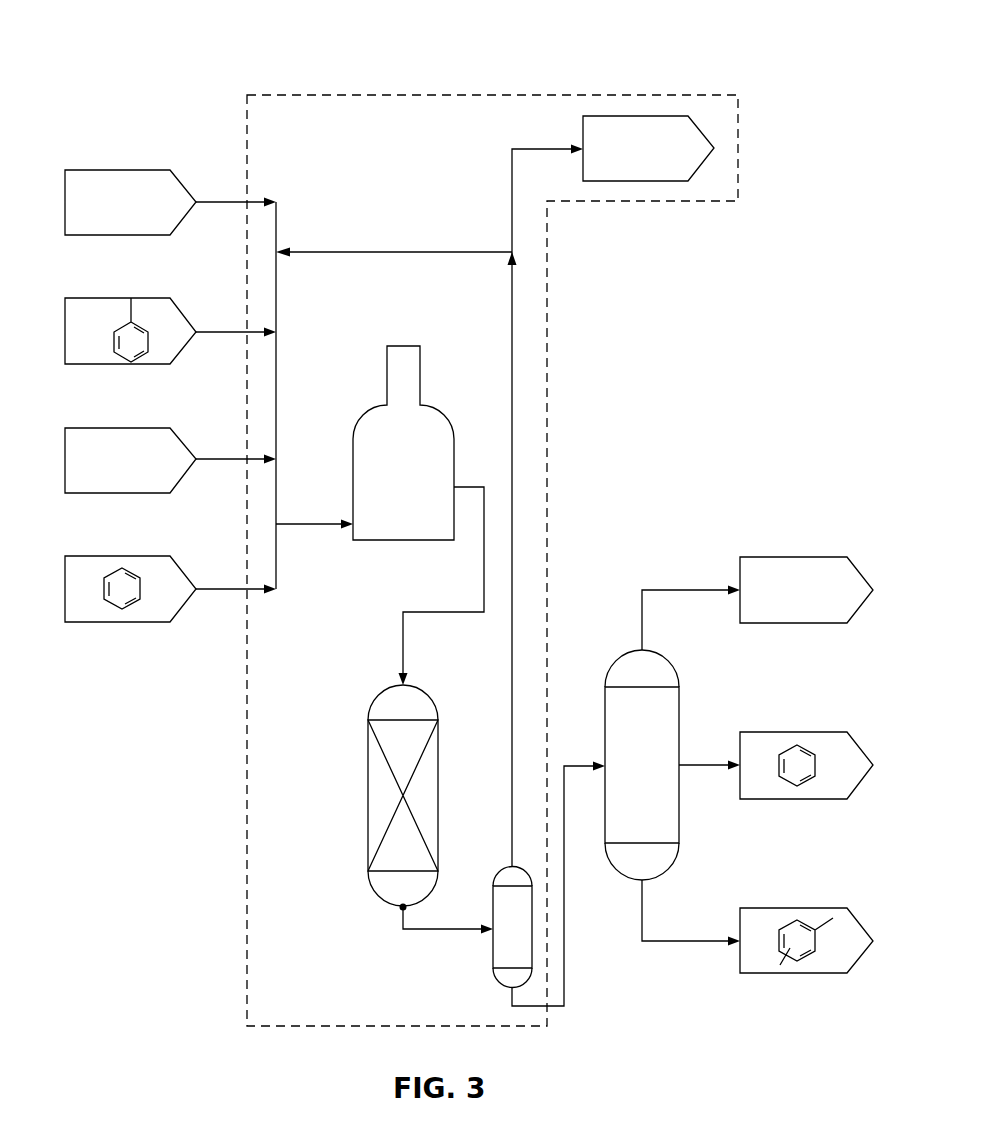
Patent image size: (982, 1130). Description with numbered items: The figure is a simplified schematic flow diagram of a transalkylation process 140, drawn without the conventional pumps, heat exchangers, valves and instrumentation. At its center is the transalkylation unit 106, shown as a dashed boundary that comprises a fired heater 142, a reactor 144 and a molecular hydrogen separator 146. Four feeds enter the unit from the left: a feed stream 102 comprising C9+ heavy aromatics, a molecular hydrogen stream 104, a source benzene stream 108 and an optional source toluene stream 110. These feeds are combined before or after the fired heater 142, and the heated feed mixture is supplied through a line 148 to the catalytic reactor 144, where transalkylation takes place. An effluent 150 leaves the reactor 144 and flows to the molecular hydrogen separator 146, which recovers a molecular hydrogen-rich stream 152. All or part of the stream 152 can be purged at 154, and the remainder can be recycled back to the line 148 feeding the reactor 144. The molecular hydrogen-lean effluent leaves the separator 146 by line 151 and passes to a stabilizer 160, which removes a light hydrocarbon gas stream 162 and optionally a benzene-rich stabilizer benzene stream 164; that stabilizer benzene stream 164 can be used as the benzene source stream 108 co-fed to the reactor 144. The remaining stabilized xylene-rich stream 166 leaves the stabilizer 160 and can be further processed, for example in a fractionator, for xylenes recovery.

The transalkylation process 140 is at (112, 47).
The transalkylation unit 106 is at (246, 788).
The molecular hydrogen stream 104 is at (237, 200).
The source toluene stream 110 is at (237, 330).
The feed stream 102 is at (237, 457).
The source benzene stream 108 is at (237, 587).
The fired heater 142 is at (435, 405).
The line 148 is at (445, 612).
The reactor 144 is at (439, 796).
The effluent 150 is at (448, 931).
The molecular hydrogen separator 146 is at (505, 867).
The molecular hydrogen-rich stream 152 is at (515, 455).
The purge 154 is at (548, 147).
The liquid product line 151 is at (564, 928).
The stabilizer 160 is at (680, 717).
The light hydrocarbon gas stream 162 is at (818, 557).
The stabilizer benzene stream 164 is at (818, 732).
The stabilized xylene-rich stream 166 is at (818, 908).